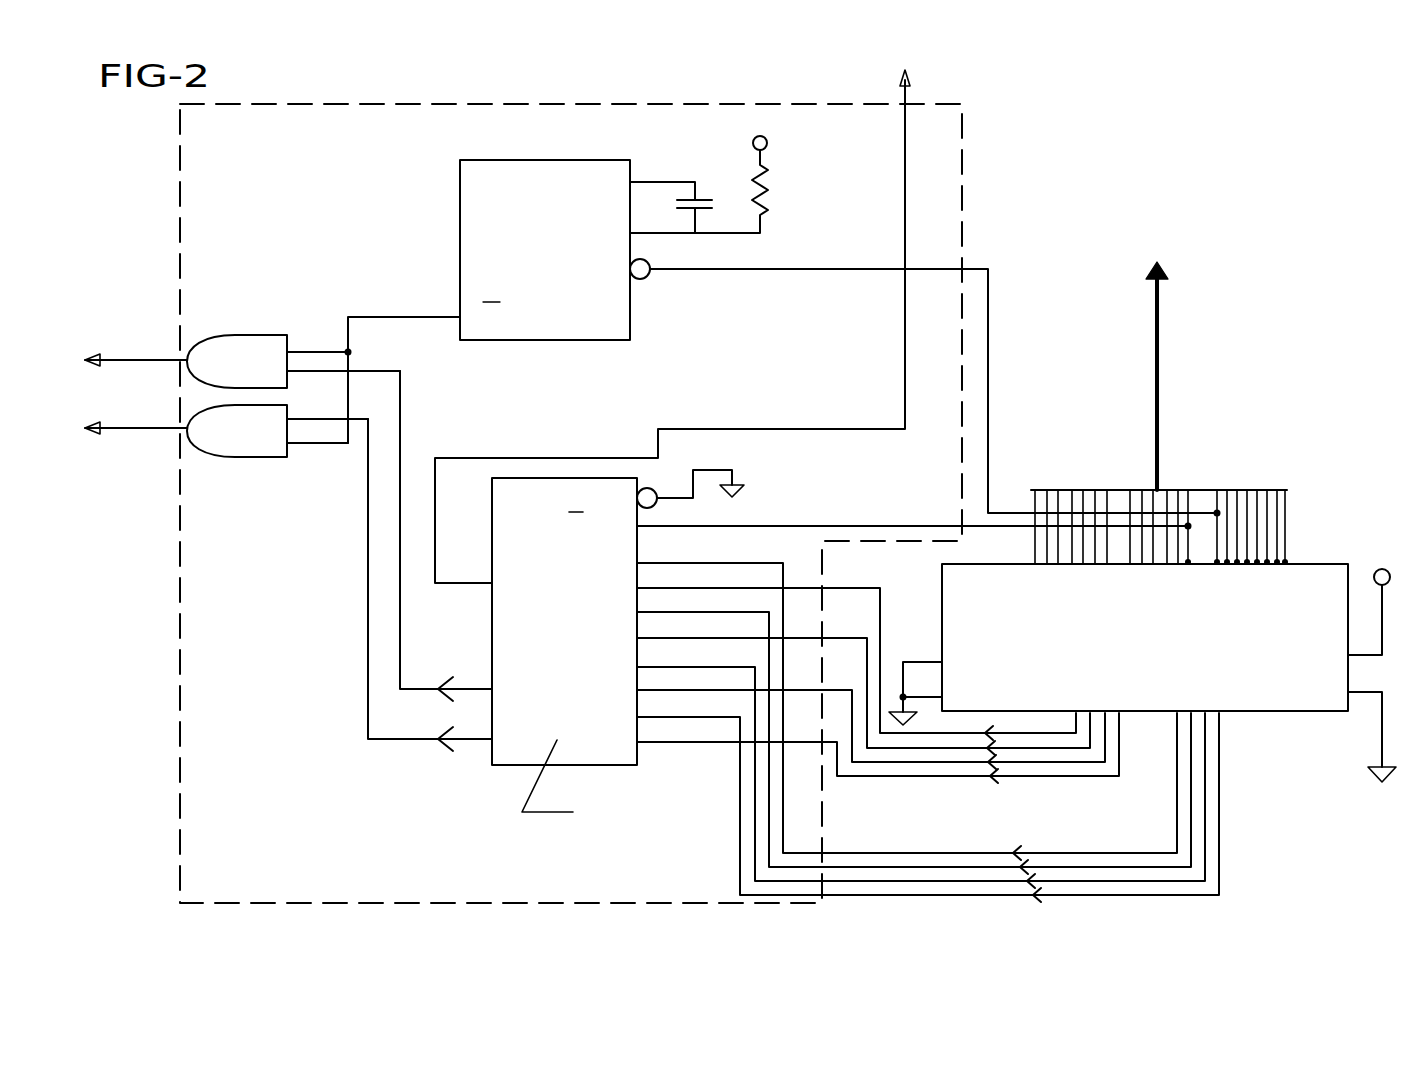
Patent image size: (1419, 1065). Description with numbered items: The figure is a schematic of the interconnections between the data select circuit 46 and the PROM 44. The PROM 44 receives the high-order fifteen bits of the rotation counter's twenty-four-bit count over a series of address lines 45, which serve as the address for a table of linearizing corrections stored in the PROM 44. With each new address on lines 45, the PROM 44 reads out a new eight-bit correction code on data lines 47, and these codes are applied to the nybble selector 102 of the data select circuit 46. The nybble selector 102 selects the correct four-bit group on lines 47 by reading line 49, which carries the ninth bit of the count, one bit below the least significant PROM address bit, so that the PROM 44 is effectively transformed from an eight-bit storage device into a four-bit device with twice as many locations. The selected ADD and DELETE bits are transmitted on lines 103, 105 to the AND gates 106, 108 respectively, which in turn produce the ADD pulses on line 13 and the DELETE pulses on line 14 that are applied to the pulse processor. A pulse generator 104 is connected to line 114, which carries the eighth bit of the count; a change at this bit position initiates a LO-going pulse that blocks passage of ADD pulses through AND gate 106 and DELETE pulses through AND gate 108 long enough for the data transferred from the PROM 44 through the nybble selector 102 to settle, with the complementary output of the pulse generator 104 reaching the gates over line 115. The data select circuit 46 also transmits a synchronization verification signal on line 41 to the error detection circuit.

The ADD line 13 is at (112, 358).
The DELETE line 14 is at (122, 430).
The synchronization verification signal line 41 is at (900, 312).
The PROM 44 is at (1297, 565).
The address lines 45 is at (1178, 366).
The data select circuit 46 is at (965, 152).
The data lines 47 is at (1190, 857).
The count line 49 is at (812, 520).
The nybble selector 102 is at (573, 478).
The ADD bit line 103 is at (402, 400).
The pulse generator 104 is at (567, 158).
The DELETE bit line 105 is at (413, 436).
The AND gate 106 is at (250, 335).
The AND gate 108 is at (235, 457).
The eighth bit line 114 is at (988, 343).
The Q-bar output line 115 is at (423, 313).